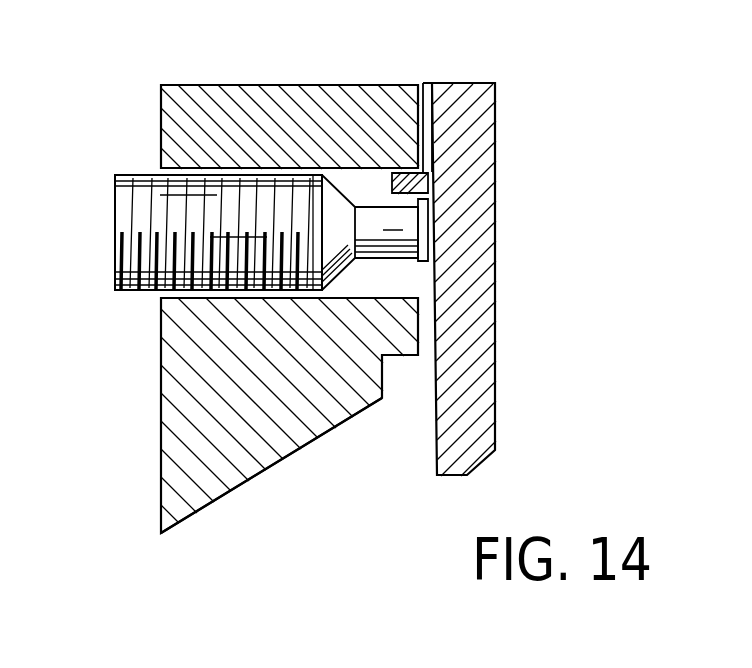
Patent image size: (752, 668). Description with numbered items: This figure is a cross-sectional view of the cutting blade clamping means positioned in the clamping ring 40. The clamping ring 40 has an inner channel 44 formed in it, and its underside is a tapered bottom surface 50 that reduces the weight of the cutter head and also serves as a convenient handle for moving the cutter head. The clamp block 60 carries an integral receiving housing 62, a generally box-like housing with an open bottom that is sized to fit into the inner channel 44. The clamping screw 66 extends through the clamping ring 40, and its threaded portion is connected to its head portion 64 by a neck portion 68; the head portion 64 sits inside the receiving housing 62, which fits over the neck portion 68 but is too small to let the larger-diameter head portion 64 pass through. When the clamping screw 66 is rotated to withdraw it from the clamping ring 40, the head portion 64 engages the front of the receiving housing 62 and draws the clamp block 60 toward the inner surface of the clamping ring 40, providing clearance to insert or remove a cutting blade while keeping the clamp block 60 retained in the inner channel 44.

The clamping ring 40 is at (186, 352).
The inner channel 44 is at (395, 273).
The tapered bottom surface 50 is at (298, 452).
The clamping block 60 is at (496, 90).
The receiving housing 62 is at (400, 172).
The head portion 64 is at (430, 222).
The clamping screw 66 is at (137, 250).
The neck portion 68 is at (370, 207).